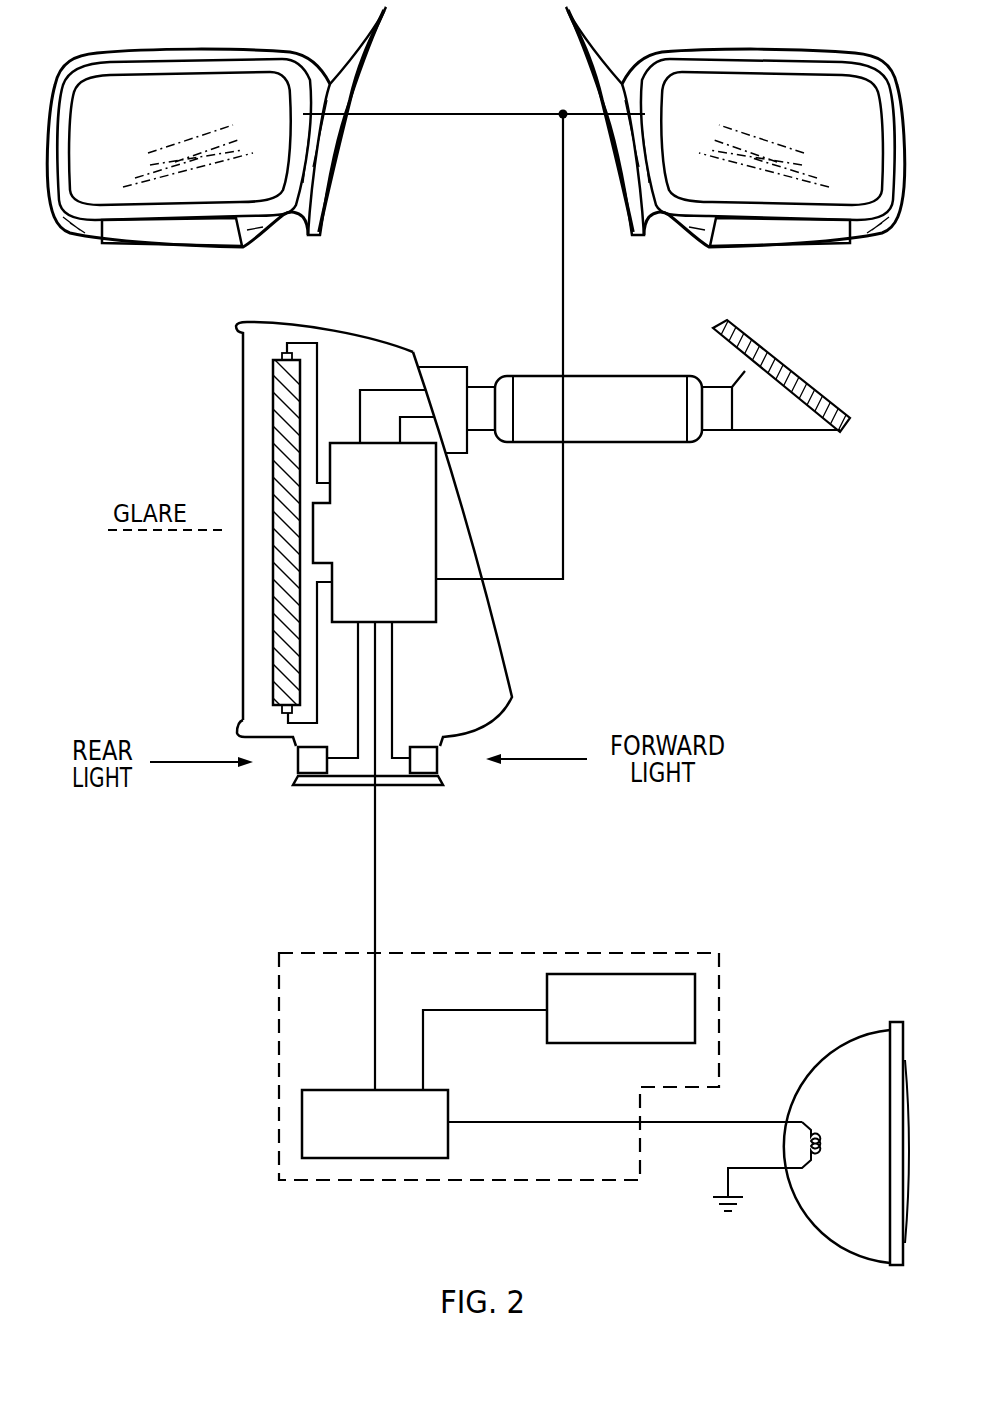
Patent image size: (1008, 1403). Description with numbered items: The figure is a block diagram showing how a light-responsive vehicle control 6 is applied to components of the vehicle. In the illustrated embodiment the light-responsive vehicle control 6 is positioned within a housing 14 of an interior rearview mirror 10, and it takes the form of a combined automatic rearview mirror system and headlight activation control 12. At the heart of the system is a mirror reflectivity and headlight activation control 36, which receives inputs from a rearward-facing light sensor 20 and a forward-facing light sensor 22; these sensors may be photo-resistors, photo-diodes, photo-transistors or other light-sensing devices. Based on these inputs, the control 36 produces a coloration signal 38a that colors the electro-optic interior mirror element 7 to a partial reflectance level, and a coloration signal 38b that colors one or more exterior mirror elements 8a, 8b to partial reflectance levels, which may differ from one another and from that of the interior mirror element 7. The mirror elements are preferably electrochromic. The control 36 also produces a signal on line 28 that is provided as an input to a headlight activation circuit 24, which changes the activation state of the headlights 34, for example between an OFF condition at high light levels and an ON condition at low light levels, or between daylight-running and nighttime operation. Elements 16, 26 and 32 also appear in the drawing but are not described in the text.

The exterior mirror element 8a is at (180, 50).
The exterior mirror element 8b is at (747, 45).
The housing 14 is at (353, 330).
The coloration signal 38a is at (318, 368).
The coloration signal 38b is at (563, 290).
The electro-optic interior mirror element 7 is at (272, 433).
The forward light sensor 16 is at (747, 332).
The mirror reflectivity and headlight activation control 36 is at (437, 500).
The interior rearview mirror 10 is at (522, 647).
The light-responsive vehicle control 6 is at (451, 682).
The combined automatic rearview mirror system and headlight activation control 12 is at (553, 862).
The light sensor 20 is at (295, 762).
The light sensor 22 is at (440, 760).
The line 28 is at (373, 850).
The headlight activation circuit 24 is at (277, 1010).
The headlight relay 26 is at (450, 1140).
The headlamp wire 32 is at (507, 1122).
The headlights 34 is at (813, 1223).